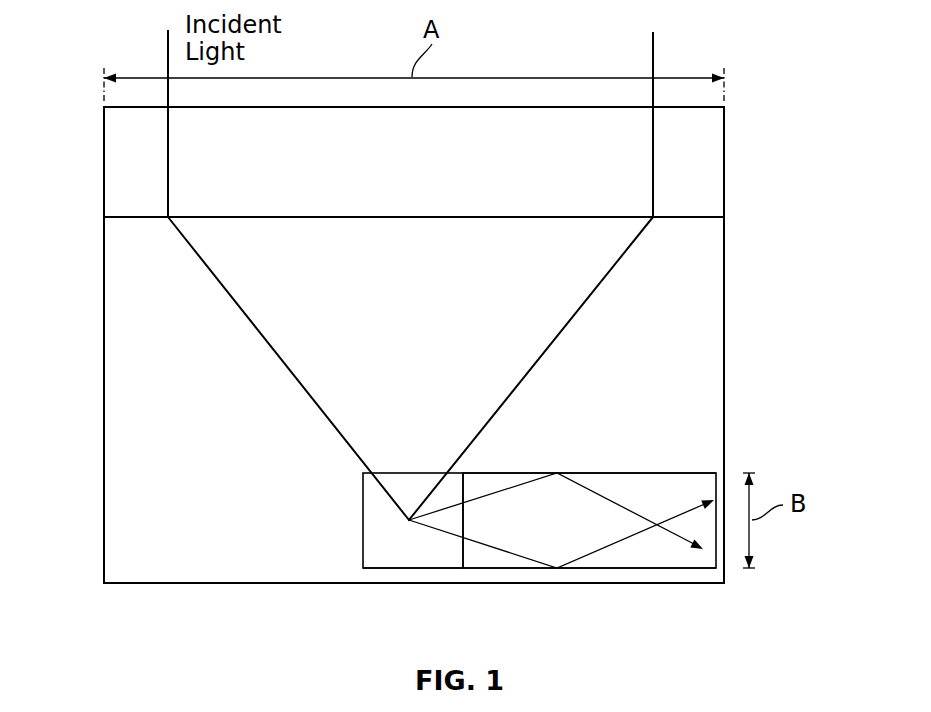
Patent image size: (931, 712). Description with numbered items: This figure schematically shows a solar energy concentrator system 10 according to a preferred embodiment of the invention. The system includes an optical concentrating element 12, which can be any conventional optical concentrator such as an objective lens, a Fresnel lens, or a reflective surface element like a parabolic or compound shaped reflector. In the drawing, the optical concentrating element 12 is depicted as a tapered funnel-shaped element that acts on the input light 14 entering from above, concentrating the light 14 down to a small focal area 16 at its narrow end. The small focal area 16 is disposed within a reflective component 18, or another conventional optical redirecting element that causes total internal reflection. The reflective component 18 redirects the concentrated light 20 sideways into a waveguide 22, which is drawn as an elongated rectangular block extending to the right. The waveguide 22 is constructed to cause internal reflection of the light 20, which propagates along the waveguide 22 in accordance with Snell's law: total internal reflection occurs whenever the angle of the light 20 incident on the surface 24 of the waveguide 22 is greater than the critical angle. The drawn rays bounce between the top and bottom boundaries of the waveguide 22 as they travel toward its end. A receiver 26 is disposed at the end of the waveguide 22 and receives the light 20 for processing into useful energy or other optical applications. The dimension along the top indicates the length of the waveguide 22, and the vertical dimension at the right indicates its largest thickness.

The solar energy concentrator system 10 is at (710, 268).
The optical concentrating element 12 is at (711, 152).
The input light 14 is at (268, 343).
The small focal area 16 is at (412, 498).
The reflective component 18 is at (396, 557).
The concentrated light 20 is at (540, 477).
The waveguide 22 is at (643, 557).
The surface of the waveguide 24 is at (684, 481).
The receiver 26 is at (695, 572).